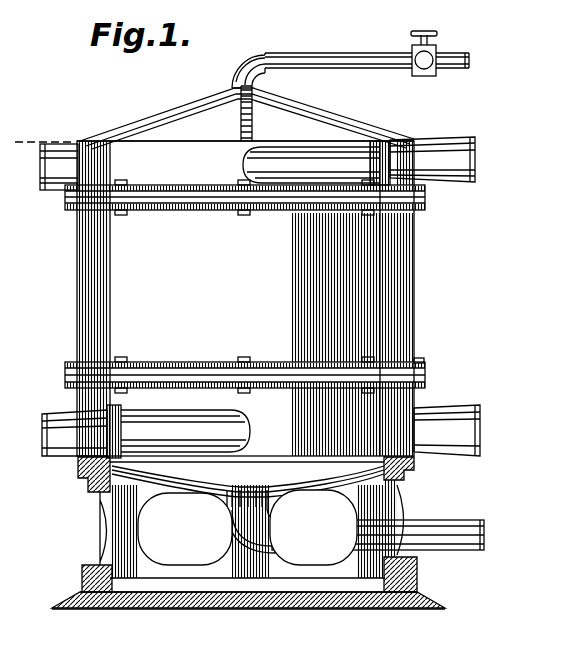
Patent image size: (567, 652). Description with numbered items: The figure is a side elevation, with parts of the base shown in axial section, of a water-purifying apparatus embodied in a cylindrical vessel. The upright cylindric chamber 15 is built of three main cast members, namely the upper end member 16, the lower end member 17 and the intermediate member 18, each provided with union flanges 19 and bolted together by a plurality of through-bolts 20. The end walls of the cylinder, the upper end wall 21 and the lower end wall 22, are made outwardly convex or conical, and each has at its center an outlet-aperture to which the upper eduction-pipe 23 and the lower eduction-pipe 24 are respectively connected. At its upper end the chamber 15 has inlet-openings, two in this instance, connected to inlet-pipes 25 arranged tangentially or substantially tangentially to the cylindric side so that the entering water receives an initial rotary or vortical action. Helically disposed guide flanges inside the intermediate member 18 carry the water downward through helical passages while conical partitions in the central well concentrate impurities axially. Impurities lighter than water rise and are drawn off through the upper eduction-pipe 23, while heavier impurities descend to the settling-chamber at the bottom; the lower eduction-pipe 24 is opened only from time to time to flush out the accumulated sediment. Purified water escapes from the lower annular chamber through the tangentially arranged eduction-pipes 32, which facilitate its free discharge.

The upright cylindric chamber 15 is at (88, 311).
The upper end member 16 is at (84, 150).
The lower end member 17 is at (85, 398).
The intermediate member 18 is at (86, 257).
The union flanges 19 is at (428, 198).
The through-bolts 20 is at (424, 360).
The upper end wall 21 is at (247, 101).
The lower end wall 22 is at (266, 462).
The upper eduction-pipe 23 is at (470, 66).
The lower eduction-pipe 24 is at (485, 537).
The inlet-pipes 25 is at (45, 162).
The eduction-pipes 32 is at (478, 428).